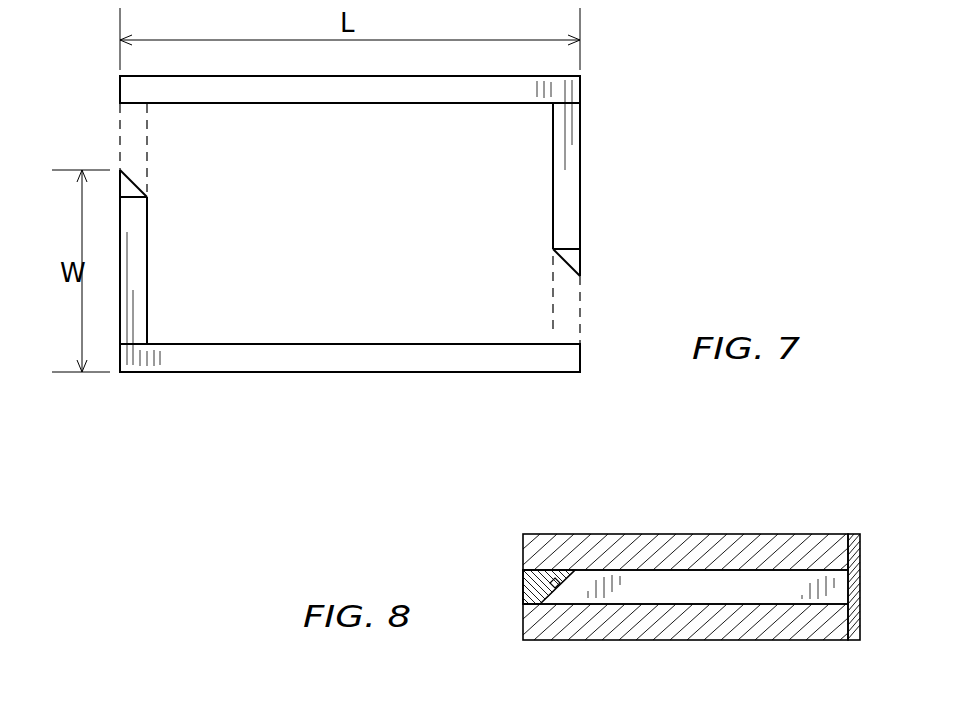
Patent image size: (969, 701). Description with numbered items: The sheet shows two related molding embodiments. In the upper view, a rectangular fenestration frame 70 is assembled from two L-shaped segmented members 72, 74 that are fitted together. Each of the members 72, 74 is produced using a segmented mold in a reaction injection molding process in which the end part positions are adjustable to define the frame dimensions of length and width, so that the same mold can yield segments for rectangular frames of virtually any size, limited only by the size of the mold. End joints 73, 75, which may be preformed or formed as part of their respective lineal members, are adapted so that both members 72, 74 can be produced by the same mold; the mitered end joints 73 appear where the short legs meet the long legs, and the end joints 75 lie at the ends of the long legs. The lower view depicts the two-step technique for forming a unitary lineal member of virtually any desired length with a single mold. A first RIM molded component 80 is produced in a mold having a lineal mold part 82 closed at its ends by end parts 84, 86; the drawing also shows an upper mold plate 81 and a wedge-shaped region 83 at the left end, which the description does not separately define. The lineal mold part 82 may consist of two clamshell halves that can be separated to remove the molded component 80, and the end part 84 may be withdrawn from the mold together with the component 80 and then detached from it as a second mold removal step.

In FIG. 7, the rectangular fenestration frame 70 is at (628, 60).
In FIG. 7, the L-shaped segmented member 72 is at (310, 344).
In FIG. 7, the end joint 73 is at (131, 184).
In FIG. 7, the L-shaped segmented member 74 is at (580, 142).
In FIG. 7, the end joint 75 is at (120, 90).
In FIG. 8, the first RIM molded component 80 is at (768, 585).
In FIG. 8, the upper plate 81 is at (680, 570).
In FIG. 8, the lineal mold part 82 is at (665, 641).
In FIG. 8, the wedge 83 is at (583, 580).
In FIG. 8, the end part 84 is at (540, 584).
In FIG. 8, the end part 86 is at (853, 534).